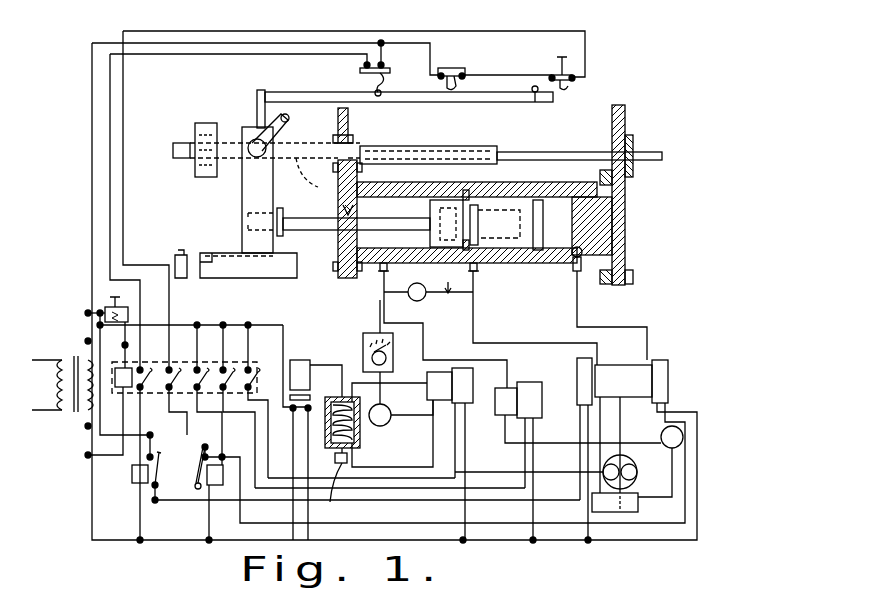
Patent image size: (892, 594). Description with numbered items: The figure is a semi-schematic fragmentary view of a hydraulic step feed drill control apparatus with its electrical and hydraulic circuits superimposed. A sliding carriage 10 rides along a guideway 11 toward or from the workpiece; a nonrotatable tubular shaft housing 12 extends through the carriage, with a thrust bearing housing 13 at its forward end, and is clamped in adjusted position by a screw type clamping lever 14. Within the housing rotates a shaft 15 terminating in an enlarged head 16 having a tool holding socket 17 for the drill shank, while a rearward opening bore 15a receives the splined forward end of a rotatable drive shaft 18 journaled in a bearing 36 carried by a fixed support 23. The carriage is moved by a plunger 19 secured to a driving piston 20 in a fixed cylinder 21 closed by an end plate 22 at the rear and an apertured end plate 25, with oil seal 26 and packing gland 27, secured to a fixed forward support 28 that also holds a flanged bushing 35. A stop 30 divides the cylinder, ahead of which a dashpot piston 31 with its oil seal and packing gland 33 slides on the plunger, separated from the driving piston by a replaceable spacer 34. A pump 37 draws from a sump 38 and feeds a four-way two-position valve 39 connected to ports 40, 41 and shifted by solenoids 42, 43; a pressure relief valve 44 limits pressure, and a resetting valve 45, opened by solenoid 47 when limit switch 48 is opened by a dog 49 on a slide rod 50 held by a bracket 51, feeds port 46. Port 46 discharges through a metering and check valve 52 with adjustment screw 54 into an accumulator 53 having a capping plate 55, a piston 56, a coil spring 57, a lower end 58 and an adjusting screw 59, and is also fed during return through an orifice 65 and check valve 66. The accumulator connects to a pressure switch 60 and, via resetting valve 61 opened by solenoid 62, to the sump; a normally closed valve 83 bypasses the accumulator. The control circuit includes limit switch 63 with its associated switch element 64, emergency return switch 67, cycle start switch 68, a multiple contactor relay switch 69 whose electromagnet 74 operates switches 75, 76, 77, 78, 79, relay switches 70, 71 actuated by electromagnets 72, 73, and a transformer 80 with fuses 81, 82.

The sliding carriage 10 is at (268, 192).
The guideway 11 is at (186, 244).
The tubular shaft housing 12 is at (362, 143).
The thrust bearing housing 13 is at (206, 123).
The screw type clamping lever 14 is at (290, 122).
The shaft 15 is at (313, 174).
The rearward opening bore 15a is at (445, 145).
The enlarged head 16 is at (183, 143).
The tool holding socket 17 is at (172, 156).
The drive shaft 18 is at (536, 152).
The plunger 19 is at (286, 212).
The driving piston 20 is at (562, 227).
The cylinder 21 is at (528, 182).
The end plate 22 is at (600, 223).
The fixed support 23 is at (620, 248).
The apertured end plate 25 is at (372, 248).
The oil seal 26 is at (338, 236).
The packing gland 27 is at (343, 214).
The fixed forward support 28 is at (338, 270).
The stop 30 is at (484, 186).
The dashpot piston 31 is at (460, 202).
The oil seal and packing gland 33 is at (432, 212).
The spacer 34 is at (492, 220).
The flanged bushing 35 is at (349, 126).
The bearing 36 is at (624, 140).
The pump 37 is at (632, 460).
The sump 38 is at (640, 508).
The four-way two-position valve 39 is at (623, 429).
The port 40 is at (570, 270).
The port 41 is at (480, 270).
The solenoid 42 is at (576, 398).
The solenoid 43 is at (668, 380).
The pressure relief valve 44 is at (680, 430).
The resetting valve 45 is at (498, 404).
The port 46 is at (388, 272).
The solenoid 47 is at (528, 395).
The limit switch 48 is at (453, 68).
The dog 49 is at (532, 90).
The slide rod 50 is at (306, 92).
The bracket 51 is at (257, 101).
The metering and check valve 52 is at (363, 338).
The accumulator 53 is at (324, 436).
The adjustment screw 54 is at (372, 357).
The capping plate 55 is at (342, 390).
The piston 56 is at (328, 415).
The coil spring 57 is at (350, 442).
The lower end 58 is at (335, 458).
The adjusting screw 59 is at (330, 502).
The pressure switch 60 is at (297, 432).
The accumulator resetting valve 61 is at (439, 386).
The solenoid 62 is at (475, 376).
The limit switch 63 is at (362, 72).
The switch blade 64 is at (390, 76).
The high resistance orifice 65 is at (448, 296).
The check valve 66 is at (408, 295).
The emergency return switch 67 is at (572, 86).
The cycle start switch 68 is at (100, 308).
The multiple contactor relay switch 69 is at (254, 368).
The relay switch 70 is at (162, 478).
The relay switch 71 is at (196, 448).
The electromagnet 72 is at (132, 475).
The electromagnet 73 is at (207, 480).
The electromagnet 74 is at (115, 380).
The normally open switch 75 is at (146, 365).
The normally open switch 76 is at (174, 365).
The normally closed switch 77 is at (202, 366).
The normally closed switch 78 is at (228, 366).
The normally closed switch 79 is at (256, 374).
The transformer 80 is at (66, 358).
The fuse 81 is at (82, 335).
The fuse 82 is at (86, 455).
The valve 83 is at (389, 426).